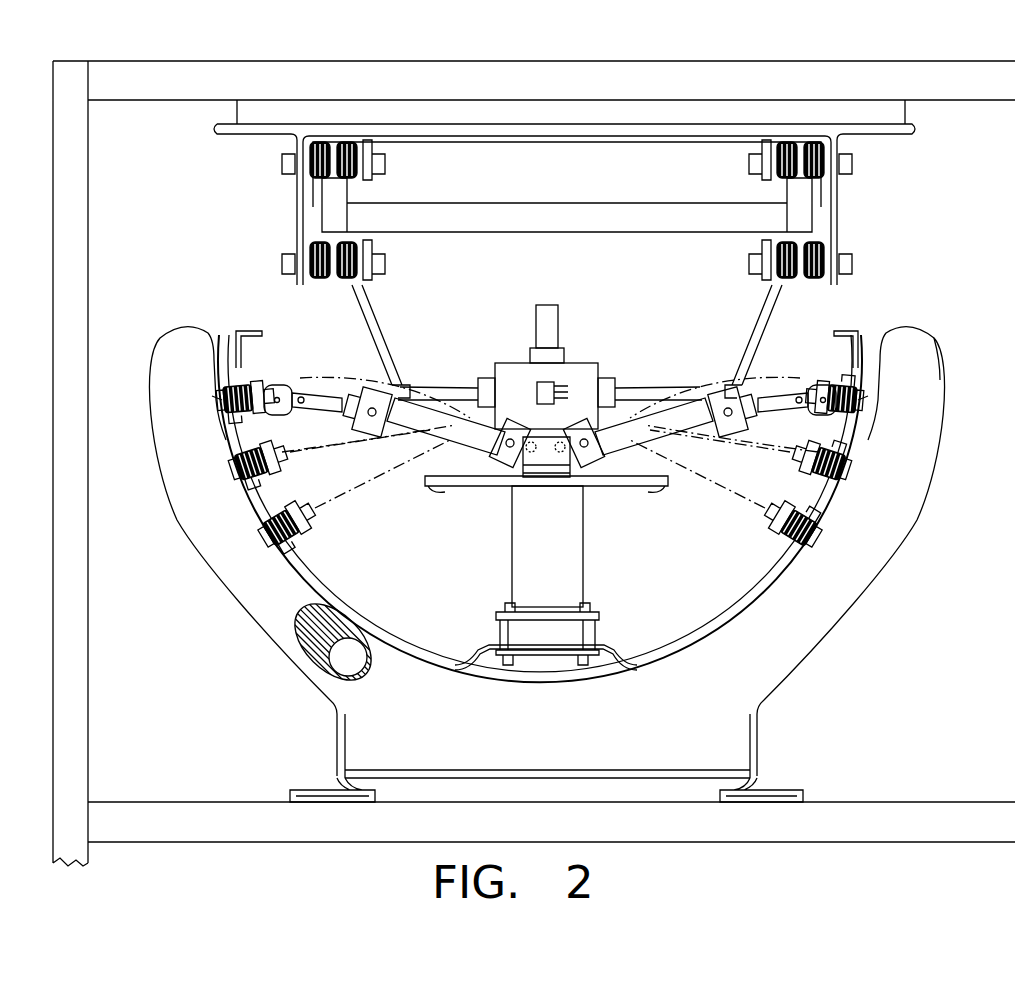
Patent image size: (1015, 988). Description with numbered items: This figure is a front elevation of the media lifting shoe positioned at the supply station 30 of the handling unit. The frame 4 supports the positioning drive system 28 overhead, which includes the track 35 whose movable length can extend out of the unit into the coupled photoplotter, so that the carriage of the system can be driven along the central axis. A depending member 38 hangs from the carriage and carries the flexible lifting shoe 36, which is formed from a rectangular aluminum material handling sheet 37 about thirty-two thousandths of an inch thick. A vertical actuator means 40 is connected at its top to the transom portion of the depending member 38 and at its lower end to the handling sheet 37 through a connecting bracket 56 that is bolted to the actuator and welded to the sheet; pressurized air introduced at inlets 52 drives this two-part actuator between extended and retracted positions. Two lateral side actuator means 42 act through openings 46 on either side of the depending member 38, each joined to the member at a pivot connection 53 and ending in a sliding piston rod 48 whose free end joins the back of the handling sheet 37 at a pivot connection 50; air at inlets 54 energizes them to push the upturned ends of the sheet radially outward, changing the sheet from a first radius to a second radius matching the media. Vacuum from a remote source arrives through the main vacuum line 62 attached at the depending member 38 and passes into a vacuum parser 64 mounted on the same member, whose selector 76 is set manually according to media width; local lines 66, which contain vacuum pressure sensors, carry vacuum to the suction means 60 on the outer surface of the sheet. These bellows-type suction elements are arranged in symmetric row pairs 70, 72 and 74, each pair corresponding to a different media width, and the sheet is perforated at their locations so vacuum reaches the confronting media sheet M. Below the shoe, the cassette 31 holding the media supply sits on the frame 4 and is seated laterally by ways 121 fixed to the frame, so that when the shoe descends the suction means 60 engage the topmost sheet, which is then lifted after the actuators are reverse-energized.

The frame 4 is at (918, 802).
The positioning drive system 28 is at (842, 126).
The supply station 30 is at (903, 321).
The cassette 31 is at (822, 652).
The track 35 is at (343, 218).
The lifting shoe 36 is at (264, 328).
The material handling sheet 37 is at (745, 620).
The depending member 38 is at (768, 292).
The vertical actuator means 40 is at (585, 552).
The lateral side actuator means 42 is at (440, 442).
The openings 46 is at (390, 385).
The sliding piston rods 48 is at (352, 390).
The pivot connections 50 is at (286, 386).
The inlets 52 is at (378, 440).
The pivot connection 53 is at (546, 441).
The inlets 54 is at (492, 487).
The connecting bracket 56 is at (613, 655).
The suction means 60 is at (213, 398).
The main vacuum line 62 is at (558, 328).
The vacuum parser 64 is at (512, 363).
The local lines 66 is at (440, 378).
The row of suction elements 70 is at (232, 410).
The row of suction elements 72 is at (245, 490).
The row of suction elements 74 is at (290, 548).
The selector 76 is at (572, 382).
The ways 121 is at (305, 788).
The media sheet M is at (368, 664).